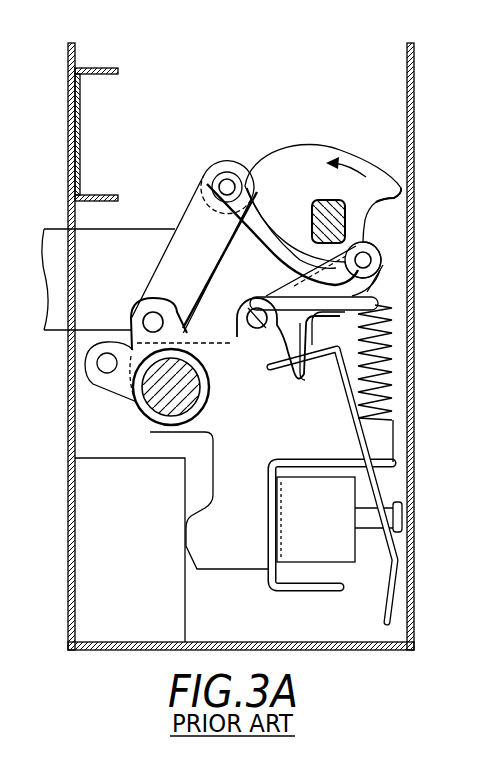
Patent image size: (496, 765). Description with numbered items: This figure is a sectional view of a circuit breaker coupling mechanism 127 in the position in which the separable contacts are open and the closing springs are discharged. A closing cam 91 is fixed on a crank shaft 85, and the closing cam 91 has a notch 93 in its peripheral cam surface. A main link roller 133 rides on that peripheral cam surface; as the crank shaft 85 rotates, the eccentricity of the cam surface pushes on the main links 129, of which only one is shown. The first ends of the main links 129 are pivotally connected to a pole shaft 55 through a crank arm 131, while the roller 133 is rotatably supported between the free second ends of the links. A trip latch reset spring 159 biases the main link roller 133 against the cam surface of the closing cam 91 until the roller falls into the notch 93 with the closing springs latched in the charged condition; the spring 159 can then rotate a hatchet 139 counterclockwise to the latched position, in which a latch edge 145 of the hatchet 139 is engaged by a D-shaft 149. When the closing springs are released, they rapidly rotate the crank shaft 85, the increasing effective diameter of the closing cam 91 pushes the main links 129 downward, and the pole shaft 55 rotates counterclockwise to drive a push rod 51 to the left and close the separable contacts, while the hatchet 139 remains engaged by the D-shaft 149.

The push rod 51 is at (64, 232).
The pole shaft 55 is at (167, 412).
The crank shaft 85 is at (327, 203).
The closing cam 91 is at (361, 158).
The notch 93 is at (390, 200).
The coupling mechanism 127 is at (239, 121).
The main links 129 is at (191, 215).
The crank arm 131 is at (137, 333).
The main link roller 133 is at (231, 163).
The hatchet 139 is at (384, 288).
The latch edge 145 is at (299, 385).
The D-shaft 149 is at (241, 338).
The trip latch reset spring 159 is at (384, 365).